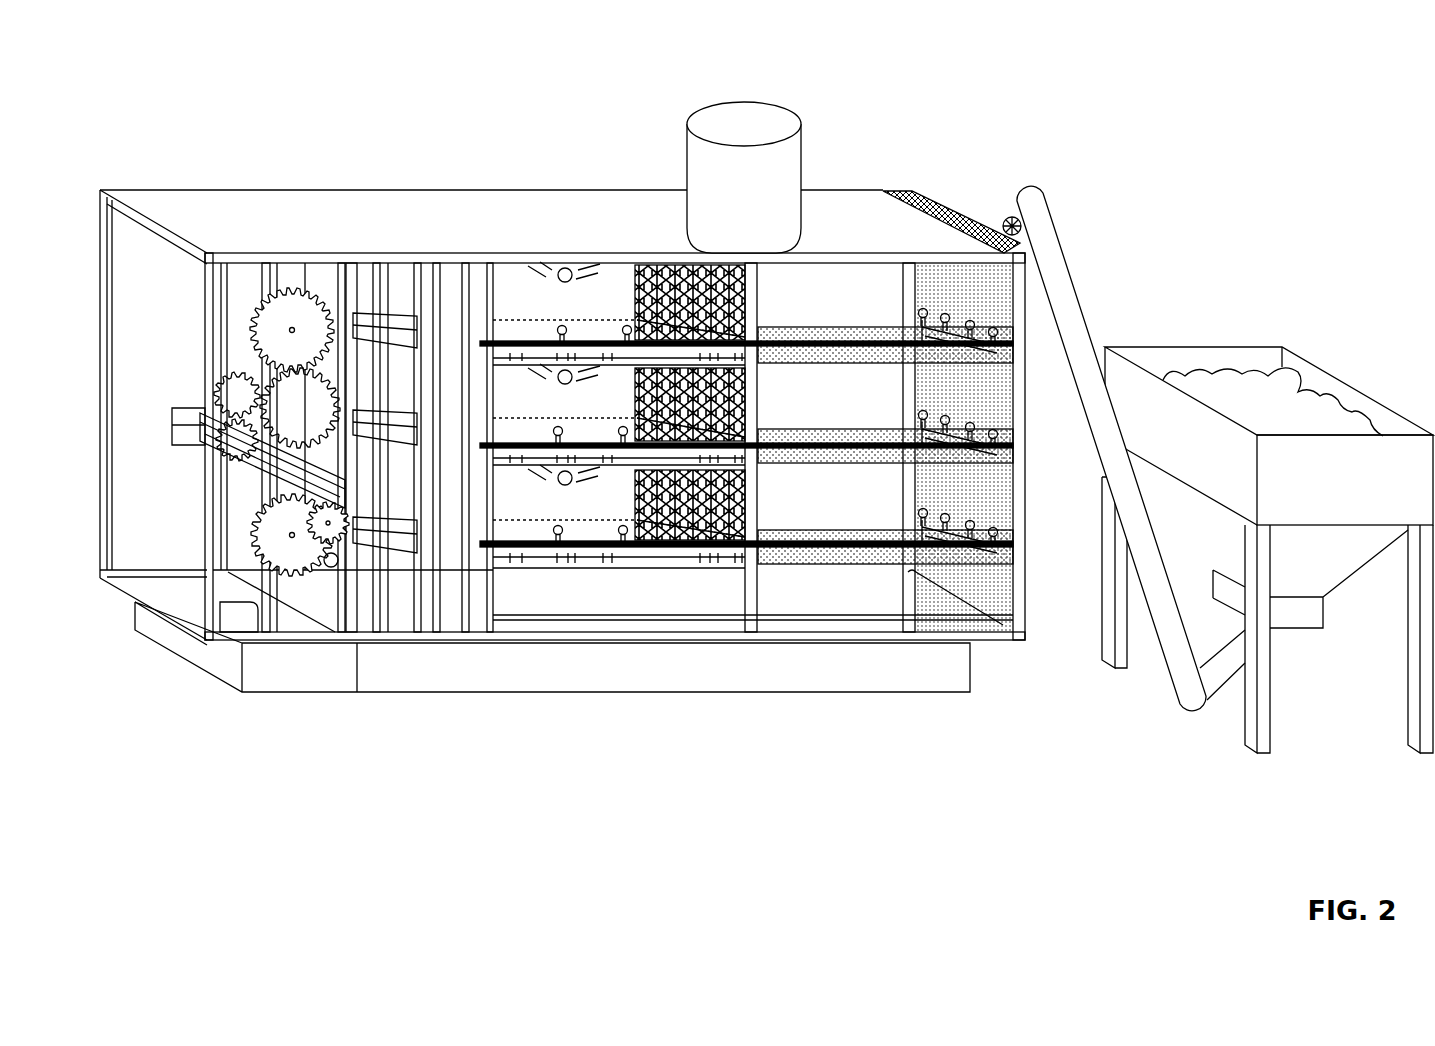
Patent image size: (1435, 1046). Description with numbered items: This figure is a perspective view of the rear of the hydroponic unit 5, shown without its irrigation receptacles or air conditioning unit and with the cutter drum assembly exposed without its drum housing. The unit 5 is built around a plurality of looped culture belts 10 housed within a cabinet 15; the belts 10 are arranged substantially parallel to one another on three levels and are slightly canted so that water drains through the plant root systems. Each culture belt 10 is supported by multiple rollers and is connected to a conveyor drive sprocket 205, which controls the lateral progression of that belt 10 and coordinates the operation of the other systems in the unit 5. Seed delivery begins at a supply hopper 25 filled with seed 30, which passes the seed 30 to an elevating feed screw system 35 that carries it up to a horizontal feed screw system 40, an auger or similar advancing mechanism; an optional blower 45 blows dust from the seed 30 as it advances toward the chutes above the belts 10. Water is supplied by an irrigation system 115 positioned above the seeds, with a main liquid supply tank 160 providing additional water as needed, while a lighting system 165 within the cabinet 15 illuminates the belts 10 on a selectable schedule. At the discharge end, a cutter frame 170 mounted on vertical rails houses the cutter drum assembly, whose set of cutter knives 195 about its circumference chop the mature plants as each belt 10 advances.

The hydroponic unit 5 is at (330, 155).
The culture belt 10 is at (513, 327).
The cabinet 15 is at (238, 190).
The supply hopper 25 is at (1190, 347).
The seed 30 is at (1272, 383).
The elevating feed screw system 35 is at (1077, 287).
The horizontal feed screw system 40 is at (912, 197).
The blower 45 is at (1001, 200).
The irrigation system 115 is at (922, 535).
The main liquid supply tank 160 is at (710, 107).
The lighting system 165 is at (563, 267).
The cutter frame 170 is at (182, 412).
The cutter knives 195 is at (263, 473).
The conveyor drive sprocket 205 is at (335, 564).